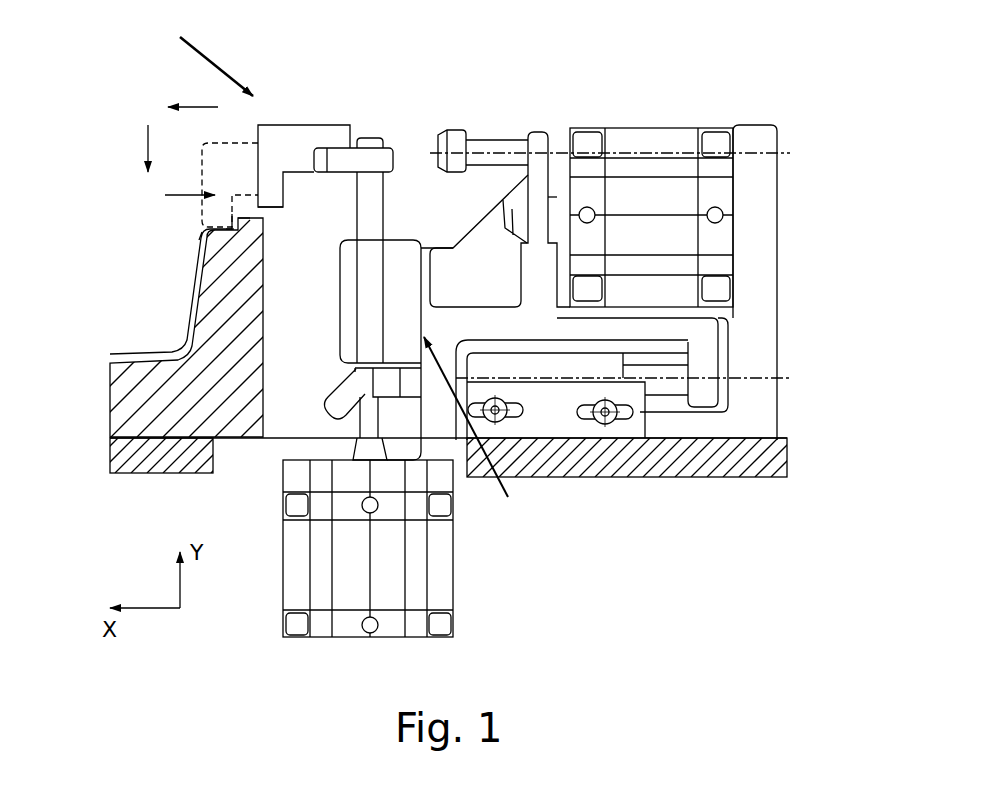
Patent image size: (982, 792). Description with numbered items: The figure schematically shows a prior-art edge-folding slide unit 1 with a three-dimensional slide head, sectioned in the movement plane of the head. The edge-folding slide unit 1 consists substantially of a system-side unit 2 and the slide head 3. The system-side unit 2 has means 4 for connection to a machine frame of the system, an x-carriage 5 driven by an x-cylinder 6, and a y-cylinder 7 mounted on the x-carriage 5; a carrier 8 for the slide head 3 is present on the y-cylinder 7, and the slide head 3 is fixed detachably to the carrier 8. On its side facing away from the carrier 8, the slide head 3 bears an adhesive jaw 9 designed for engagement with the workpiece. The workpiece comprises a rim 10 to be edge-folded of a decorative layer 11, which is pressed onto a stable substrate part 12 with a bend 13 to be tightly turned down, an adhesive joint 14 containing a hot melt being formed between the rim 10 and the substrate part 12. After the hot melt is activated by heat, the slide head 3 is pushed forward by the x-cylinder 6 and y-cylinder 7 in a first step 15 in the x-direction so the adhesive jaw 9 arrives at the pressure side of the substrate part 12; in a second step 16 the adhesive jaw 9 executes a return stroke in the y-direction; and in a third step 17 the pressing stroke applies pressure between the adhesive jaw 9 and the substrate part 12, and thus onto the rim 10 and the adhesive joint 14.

The edge-folding slide unit 1 is at (793, 110).
The system-side unit 2 is at (781, 353).
The slide head 3 is at (306, 118).
The means for connection to a machine frame 4 is at (614, 422).
The x-carriage 5 is at (699, 336).
The x-cylinder 6 is at (641, 142).
The y-cylinder 7 is at (372, 196).
The carrier 8 is at (356, 156).
The adhesive jaw 9 is at (273, 182).
The rim 10 is at (242, 234).
The decorative layer 11 is at (188, 312).
The substrate part 12 is at (136, 388).
The bend 13 is at (199, 240).
The adhesive joint 14 is at (229, 238).
The first step 15 is at (193, 93).
The second step 16 is at (132, 148).
The third step 17 is at (190, 183).